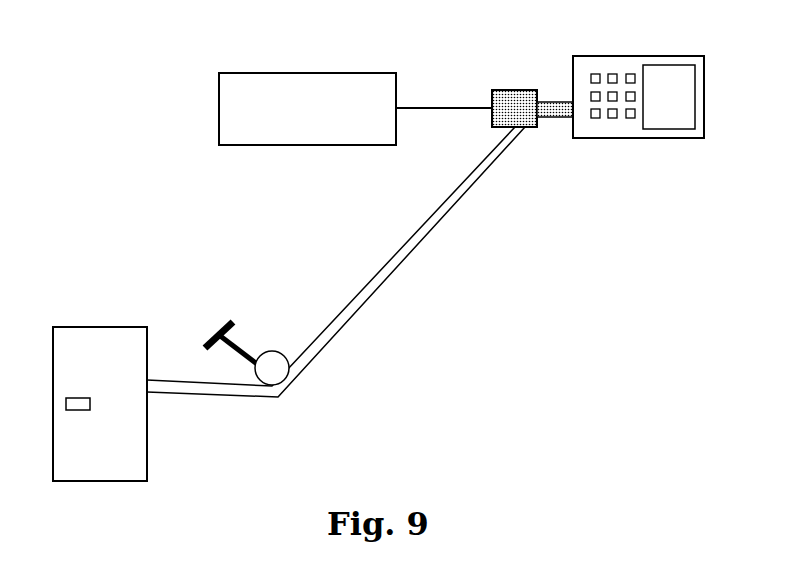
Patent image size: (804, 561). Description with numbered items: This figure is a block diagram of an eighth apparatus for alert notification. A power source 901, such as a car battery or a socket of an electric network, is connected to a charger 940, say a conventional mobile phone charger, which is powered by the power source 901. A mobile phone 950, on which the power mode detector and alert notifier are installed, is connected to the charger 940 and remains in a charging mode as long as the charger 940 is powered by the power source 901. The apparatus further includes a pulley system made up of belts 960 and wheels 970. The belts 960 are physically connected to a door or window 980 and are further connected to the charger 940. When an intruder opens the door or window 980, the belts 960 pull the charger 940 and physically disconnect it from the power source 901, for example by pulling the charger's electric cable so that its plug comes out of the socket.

The power source 901 is at (232, 122).
The charger 940 is at (515, 107).
The mobile phone 950 is at (679, 108).
The belts 960 is at (336, 262).
The wheels 970 is at (265, 368).
The door or window 980 is at (100, 346).